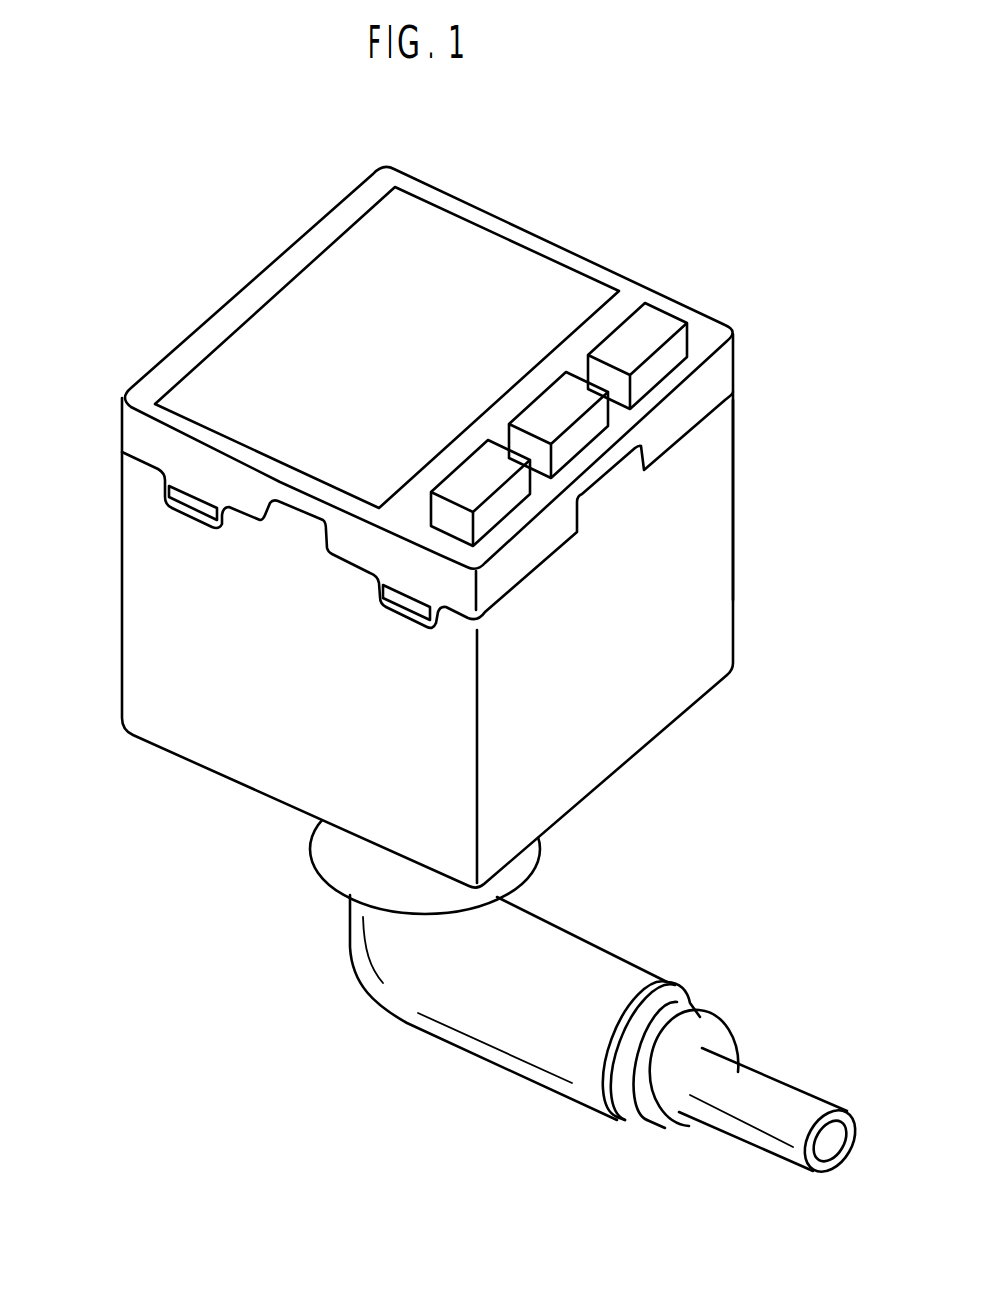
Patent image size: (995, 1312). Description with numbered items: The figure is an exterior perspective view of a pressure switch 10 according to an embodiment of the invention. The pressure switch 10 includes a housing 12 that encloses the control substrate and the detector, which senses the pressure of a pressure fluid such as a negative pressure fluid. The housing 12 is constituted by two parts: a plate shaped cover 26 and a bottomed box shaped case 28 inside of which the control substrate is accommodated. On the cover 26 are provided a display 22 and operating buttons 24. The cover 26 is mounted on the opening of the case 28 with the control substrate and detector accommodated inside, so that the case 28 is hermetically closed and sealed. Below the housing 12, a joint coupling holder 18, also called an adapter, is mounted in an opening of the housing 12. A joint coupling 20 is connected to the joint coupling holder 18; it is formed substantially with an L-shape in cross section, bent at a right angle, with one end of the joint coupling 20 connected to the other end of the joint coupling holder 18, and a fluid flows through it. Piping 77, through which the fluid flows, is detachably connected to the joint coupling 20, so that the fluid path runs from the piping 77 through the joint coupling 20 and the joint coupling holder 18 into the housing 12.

The pressure switch 10 is at (685, 139).
The housing 12 is at (119, 548).
The joint coupling holder 18 is at (320, 870).
The joint coupling 20 is at (566, 915).
The display 22 is at (316, 292).
The operating buttons 24 is at (555, 407).
The cover 26 is at (707, 330).
The case 28 is at (727, 600).
The piping 77 is at (775, 1083).